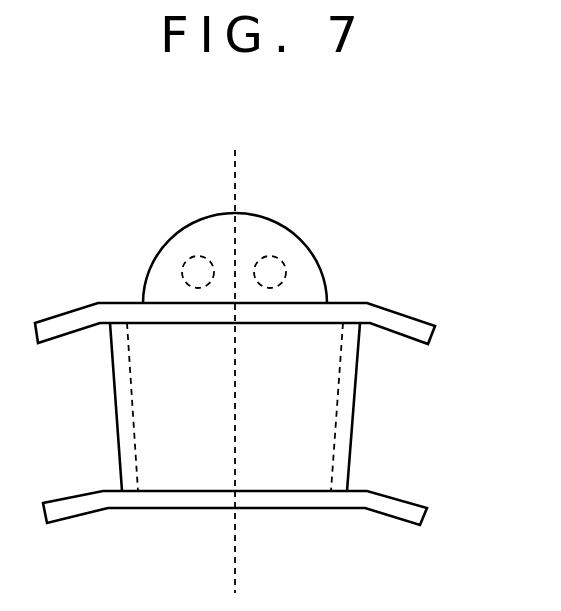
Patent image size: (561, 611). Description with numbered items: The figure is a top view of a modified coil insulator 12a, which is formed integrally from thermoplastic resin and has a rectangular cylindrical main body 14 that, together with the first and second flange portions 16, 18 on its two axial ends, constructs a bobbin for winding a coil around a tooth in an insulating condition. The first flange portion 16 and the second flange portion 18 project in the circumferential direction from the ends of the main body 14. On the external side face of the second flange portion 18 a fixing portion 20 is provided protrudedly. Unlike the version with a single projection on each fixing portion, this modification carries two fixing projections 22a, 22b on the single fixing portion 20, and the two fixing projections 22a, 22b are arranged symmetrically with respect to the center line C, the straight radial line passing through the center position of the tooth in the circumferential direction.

The coil insulator 12a is at (372, 262).
The main body 14 is at (353, 400).
The first flange portion 16 is at (397, 500).
The second flange portion 18 is at (402, 312).
The fixing portion 20 is at (156, 254).
The fixing projection 22a is at (196, 256).
The fixing projection 22b is at (275, 256).
The center line C is at (235, 550).